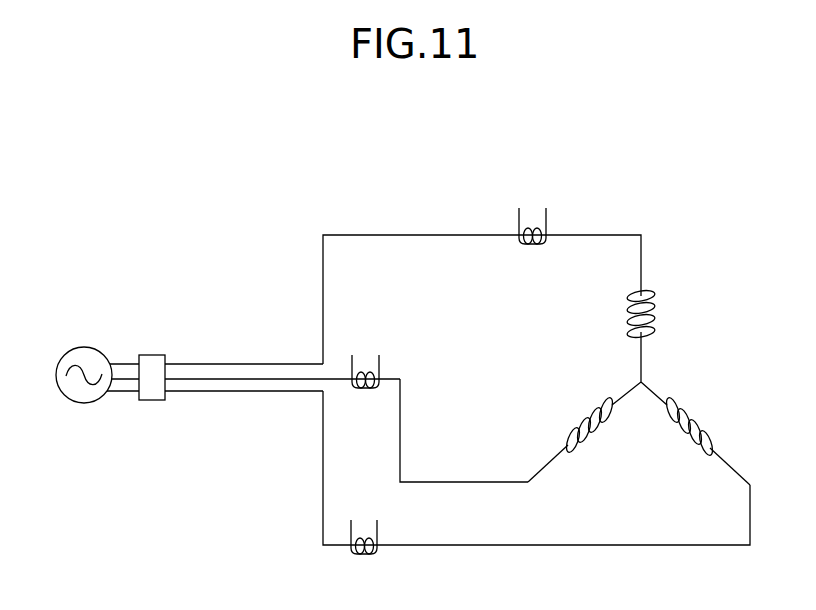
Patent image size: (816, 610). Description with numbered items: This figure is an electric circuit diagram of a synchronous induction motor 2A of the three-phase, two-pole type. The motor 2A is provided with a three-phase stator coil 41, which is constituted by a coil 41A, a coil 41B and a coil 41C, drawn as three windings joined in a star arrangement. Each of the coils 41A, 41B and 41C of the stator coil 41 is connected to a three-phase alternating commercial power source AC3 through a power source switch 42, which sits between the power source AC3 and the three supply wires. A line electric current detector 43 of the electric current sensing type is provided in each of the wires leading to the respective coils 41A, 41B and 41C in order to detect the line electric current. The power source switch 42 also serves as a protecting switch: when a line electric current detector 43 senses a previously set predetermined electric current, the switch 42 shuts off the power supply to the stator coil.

The three-phase alternating commercial power source AC3 is at (72, 352).
The power source switch 42 is at (153, 355).
The line electric current detector 43 is at (517, 222).
The synchronous induction motor 2A is at (644, 362).
The three-phase stator coil 41 is at (637, 399).
The coil 41A is at (636, 322).
The coil 41B is at (686, 447).
The coil 41C is at (582, 413).